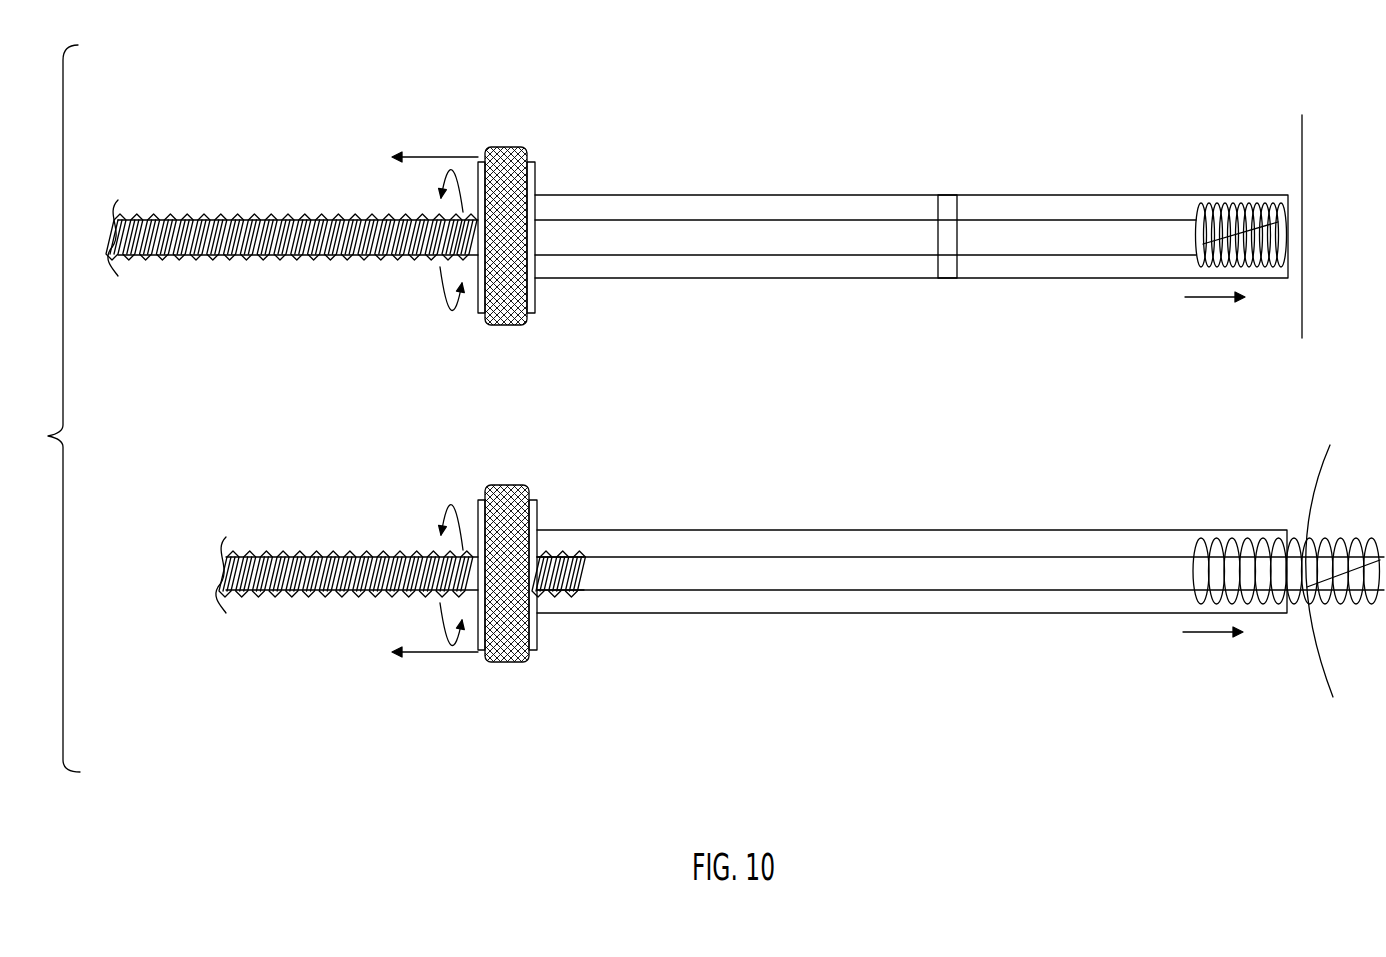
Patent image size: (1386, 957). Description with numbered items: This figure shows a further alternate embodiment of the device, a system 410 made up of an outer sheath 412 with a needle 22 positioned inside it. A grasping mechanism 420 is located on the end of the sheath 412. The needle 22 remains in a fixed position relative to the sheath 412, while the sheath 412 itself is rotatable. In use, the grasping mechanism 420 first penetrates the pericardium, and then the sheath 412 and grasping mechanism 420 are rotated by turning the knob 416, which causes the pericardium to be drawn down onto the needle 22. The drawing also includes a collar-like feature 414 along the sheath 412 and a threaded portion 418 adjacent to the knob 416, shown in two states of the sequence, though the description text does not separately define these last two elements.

The system 410 is at (803, 152).
The outer sheath 412 is at (1122, 268).
The collar 414 is at (948, 210).
The knob 416 is at (502, 327).
The threaded shaft 418 is at (312, 254).
The grasping mechanism 420 is at (1300, 155).
The needle 22 is at (1170, 232).